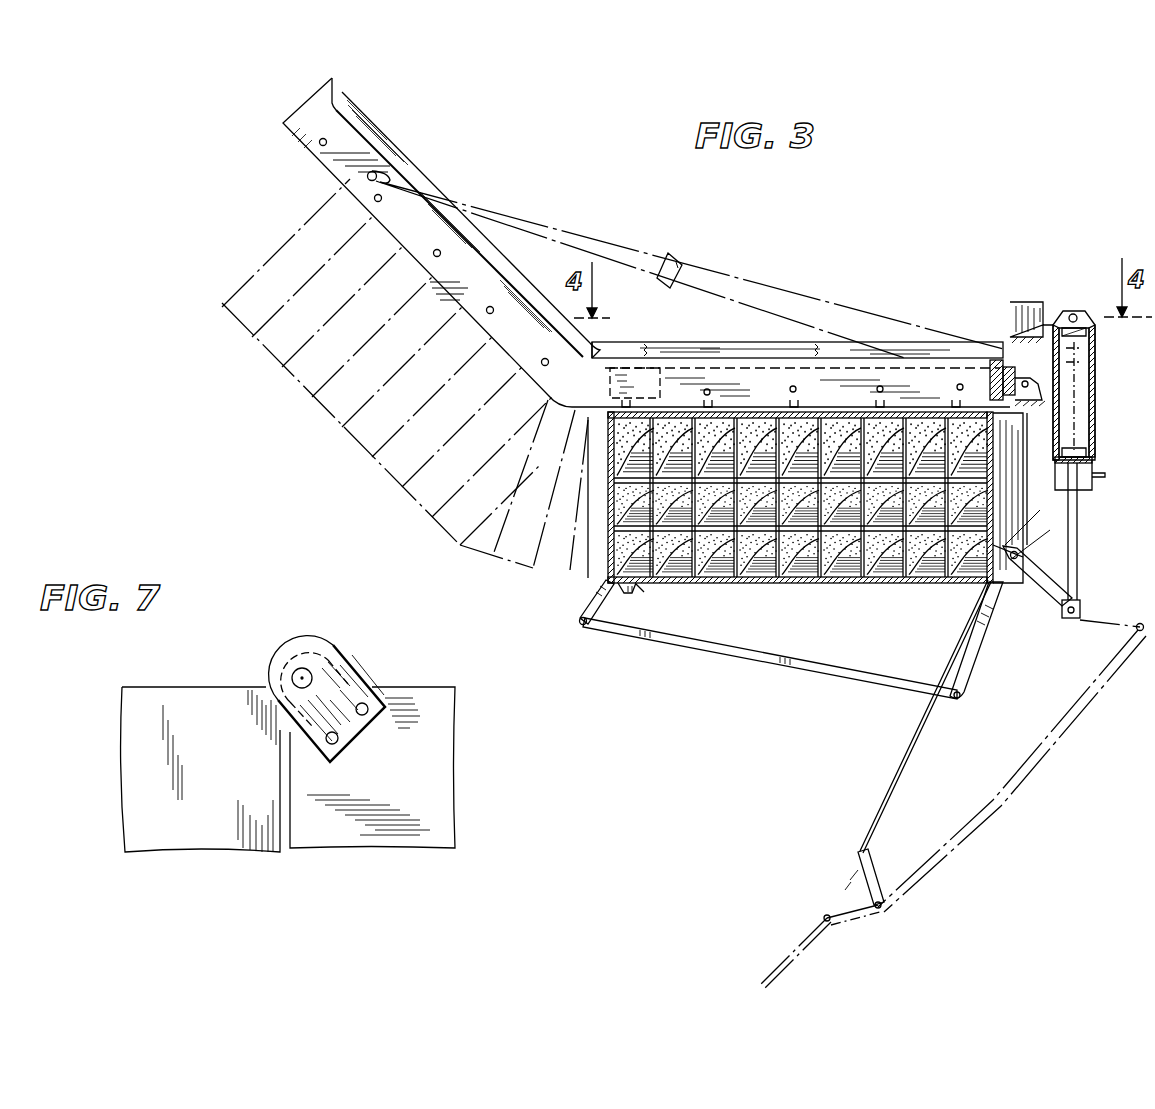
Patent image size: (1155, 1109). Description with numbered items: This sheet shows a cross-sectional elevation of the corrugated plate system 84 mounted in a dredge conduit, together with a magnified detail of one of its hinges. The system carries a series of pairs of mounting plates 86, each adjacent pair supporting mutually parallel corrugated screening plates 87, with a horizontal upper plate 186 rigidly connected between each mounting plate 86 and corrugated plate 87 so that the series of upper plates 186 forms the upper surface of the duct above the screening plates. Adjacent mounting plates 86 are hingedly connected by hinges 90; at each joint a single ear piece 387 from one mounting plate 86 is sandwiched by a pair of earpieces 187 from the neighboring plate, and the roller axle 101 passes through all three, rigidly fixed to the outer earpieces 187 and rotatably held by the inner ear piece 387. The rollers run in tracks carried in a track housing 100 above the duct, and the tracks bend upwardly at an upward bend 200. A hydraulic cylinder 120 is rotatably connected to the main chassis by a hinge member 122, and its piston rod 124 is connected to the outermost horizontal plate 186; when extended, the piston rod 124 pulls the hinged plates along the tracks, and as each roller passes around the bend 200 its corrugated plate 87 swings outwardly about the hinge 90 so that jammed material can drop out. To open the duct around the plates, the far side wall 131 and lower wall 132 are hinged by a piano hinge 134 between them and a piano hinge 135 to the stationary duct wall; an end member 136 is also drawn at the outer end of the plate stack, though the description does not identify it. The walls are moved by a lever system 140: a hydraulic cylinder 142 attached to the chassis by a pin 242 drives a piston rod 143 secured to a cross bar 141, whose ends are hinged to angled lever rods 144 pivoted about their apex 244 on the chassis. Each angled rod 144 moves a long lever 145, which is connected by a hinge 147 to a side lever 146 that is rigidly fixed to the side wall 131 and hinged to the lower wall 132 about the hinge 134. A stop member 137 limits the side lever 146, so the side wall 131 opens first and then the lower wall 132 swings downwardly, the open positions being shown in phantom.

In FIG. 3, the corrugated plate system 84 is at (628, 340).
In FIG. 7, the mounting plates 86 is at (212, 692).
In FIG. 3, the corrugated screening plates 87 is at (697, 584).
In FIG. 7, the hinge 90 is at (306, 636).
In FIG. 3, the track housing 100 is at (712, 336).
In FIG. 7, the roller axle 101 is at (295, 690).
In FIG. 3, the hydraulic cylinder 120 is at (855, 306).
In FIG. 3, the hinge member 122 is at (1038, 400).
In FIG. 3, the piston rod 124 is at (537, 226).
In FIG. 3, the side wall 131 is at (575, 568).
In FIG. 3, the lower wall 132 is at (836, 590).
In FIG. 3, the piano hinge 134 is at (618, 588).
In FIG. 3, the piano hinge 135 is at (980, 586).
In FIG. 3, the end plate 136 is at (1020, 487).
In FIG. 3, the stop member 137 is at (640, 590).
In FIG. 3, the lever system 140 is at (1000, 636).
In FIG. 3, the cross bar 141 is at (1080, 620).
In FIG. 3, the hydraulic cylinder 142 is at (1098, 387).
In FIG. 3, the piston rod 143 is at (1078, 497).
In FIG. 3, the angled lever rod 144 is at (1024, 590).
In FIG. 3, the long lever 145 is at (725, 658).
In FIG. 3, the side lever 146 is at (582, 620).
In FIG. 3, the hinge 147 is at (582, 628).
In FIG. 3, the horizontal upper plate 186 is at (832, 408).
In FIG. 7, the earpieces 187 is at (363, 674).
In FIG. 3, the upward bend 200 is at (600, 332).
In FIG. 3, the pin 242 is at (1073, 313).
In FIG. 3, the apex 244 is at (1060, 550).
In FIG. 7, the ear piece 387 is at (336, 645).